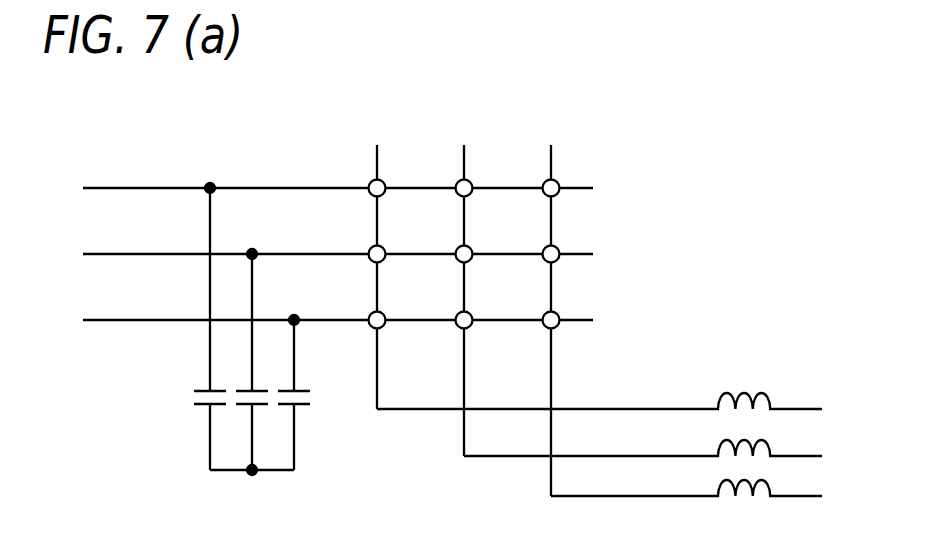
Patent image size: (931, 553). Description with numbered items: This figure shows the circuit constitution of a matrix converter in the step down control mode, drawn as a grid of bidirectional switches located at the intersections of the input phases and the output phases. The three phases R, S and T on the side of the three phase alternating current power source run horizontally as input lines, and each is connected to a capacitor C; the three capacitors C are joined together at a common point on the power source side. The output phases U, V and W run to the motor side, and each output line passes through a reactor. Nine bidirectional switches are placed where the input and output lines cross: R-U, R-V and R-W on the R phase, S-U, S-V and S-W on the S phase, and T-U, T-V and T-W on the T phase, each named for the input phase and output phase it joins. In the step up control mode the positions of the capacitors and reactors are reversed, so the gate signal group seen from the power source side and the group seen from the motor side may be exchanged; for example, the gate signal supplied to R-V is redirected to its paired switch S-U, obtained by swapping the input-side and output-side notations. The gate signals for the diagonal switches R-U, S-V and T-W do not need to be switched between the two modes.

The R phase R is at (338, 173).
The S phase S is at (338, 239).
The T phase T is at (338, 305).
The capacitor C is at (248, 329).
The U phase U is at (599, 393).
The V phase V is at (643, 440).
The W phase W is at (686, 479).
The bidirectional switch R-U is at (349, 177).
The bidirectional switch R-V is at (438, 177).
The bidirectional switch R-W is at (522, 177).
The bidirectional switch S-U is at (350, 243).
The bidirectional switch S-V is at (438, 243).
The bidirectional switch S-W is at (522, 243).
The bidirectional switch T-U is at (350, 308).
The bidirectional switch T-V is at (439, 308).
The bidirectional switch T-W is at (523, 308).